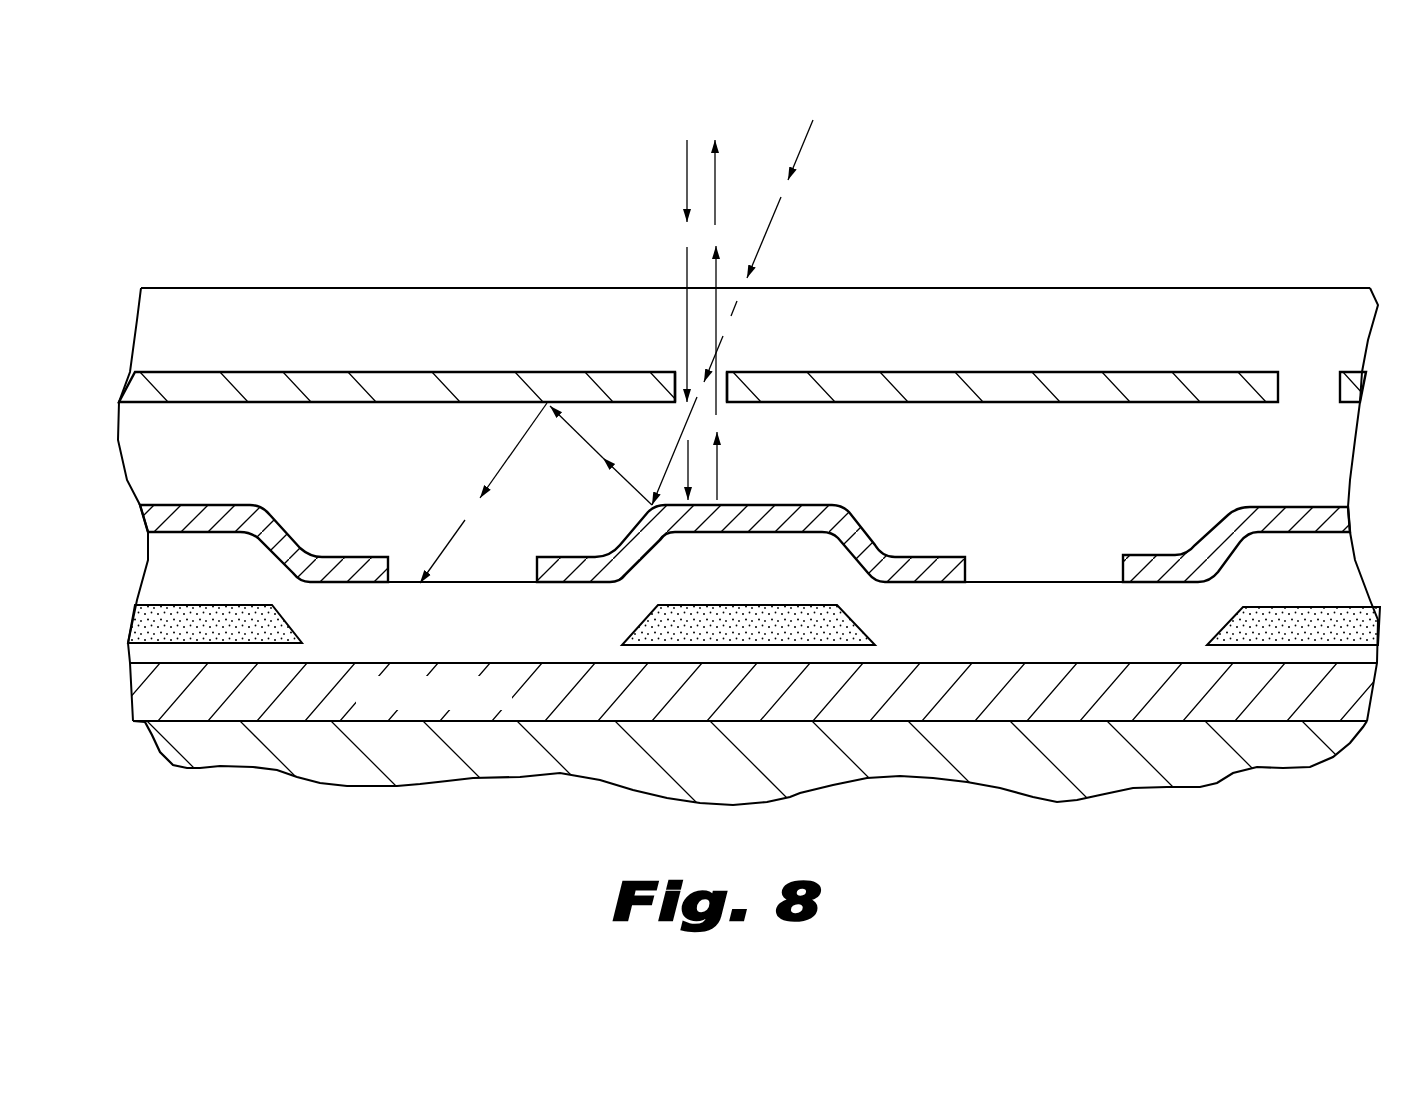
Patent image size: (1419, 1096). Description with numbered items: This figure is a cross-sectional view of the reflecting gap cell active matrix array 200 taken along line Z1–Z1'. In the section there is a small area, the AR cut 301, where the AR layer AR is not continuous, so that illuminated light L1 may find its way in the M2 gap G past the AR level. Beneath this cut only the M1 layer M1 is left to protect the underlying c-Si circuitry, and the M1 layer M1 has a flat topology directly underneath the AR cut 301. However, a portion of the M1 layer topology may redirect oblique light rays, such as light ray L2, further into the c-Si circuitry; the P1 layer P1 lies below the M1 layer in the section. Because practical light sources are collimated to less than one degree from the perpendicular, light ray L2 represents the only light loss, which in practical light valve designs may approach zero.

The reflecting gap cell active matrix array 200 is at (751, 436).
The AR cut 301 is at (736, 418).
The M2 gap G is at (566, 290).
The AR layer AR is at (512, 378).
The M1 layer M1 is at (937, 557).
The first polysilicon layer P1 is at (811, 622).
The illuminated light ray L1 is at (676, 320).
The oblique light ray L2 is at (640, 342).